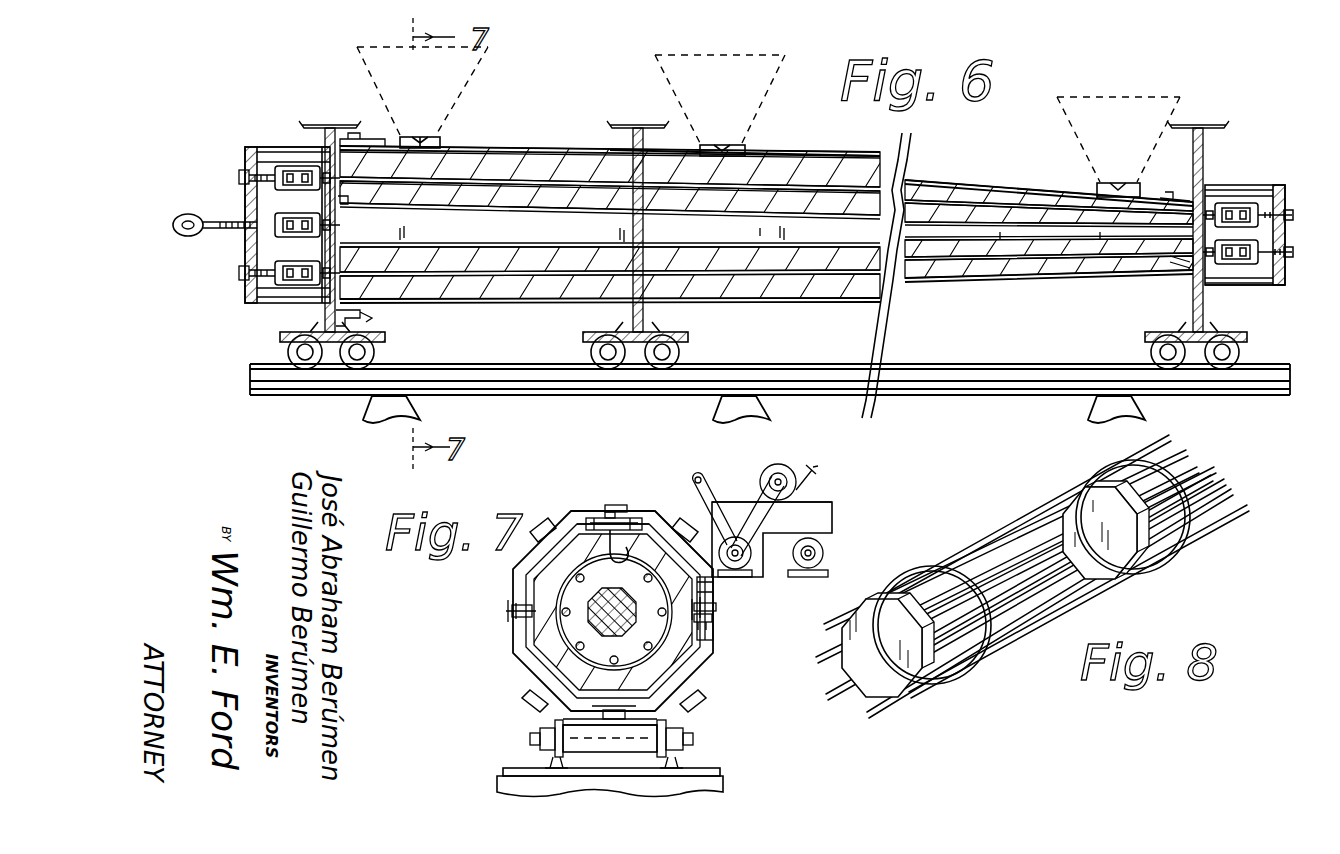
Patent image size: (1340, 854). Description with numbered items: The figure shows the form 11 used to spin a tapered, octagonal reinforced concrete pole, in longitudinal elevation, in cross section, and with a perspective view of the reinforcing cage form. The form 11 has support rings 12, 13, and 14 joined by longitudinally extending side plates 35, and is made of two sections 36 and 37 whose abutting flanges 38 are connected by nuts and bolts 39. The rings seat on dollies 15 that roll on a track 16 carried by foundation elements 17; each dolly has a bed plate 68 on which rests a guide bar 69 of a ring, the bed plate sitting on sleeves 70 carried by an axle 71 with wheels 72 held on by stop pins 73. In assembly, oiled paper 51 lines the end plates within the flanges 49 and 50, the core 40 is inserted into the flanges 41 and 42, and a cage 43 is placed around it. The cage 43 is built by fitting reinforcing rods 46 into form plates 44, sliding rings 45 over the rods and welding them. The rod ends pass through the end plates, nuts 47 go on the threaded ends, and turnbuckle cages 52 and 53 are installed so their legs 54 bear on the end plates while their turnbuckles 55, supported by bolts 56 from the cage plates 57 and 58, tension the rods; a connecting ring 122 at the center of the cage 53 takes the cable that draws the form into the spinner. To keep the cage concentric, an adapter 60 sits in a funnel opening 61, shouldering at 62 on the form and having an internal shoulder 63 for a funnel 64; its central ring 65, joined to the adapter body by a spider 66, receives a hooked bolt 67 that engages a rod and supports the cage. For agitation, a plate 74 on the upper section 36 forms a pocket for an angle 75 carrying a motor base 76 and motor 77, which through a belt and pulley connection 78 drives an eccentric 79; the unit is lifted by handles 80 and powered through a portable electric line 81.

In FIG. 6, the form 11 is at (527, 141).
In FIG. 6, the support ring 12 is at (326, 130).
In FIG. 7, the support ring 12 is at (658, 512).
In FIG. 6, the support ring 13 is at (622, 148).
In FIG. 6, the support ring 14 is at (1203, 160).
In FIG. 6, the dolly 15 is at (264, 340).
In FIG. 6, the track 16 is at (497, 362).
In FIG. 7, the track 16 is at (682, 768).
In FIG. 6, the foundation element 17 is at (372, 408).
In FIG. 6, the side plate 35 is at (490, 146).
In FIG. 7, the side plate 35 is at (540, 540).
In FIG. 7, the upper form section 36 is at (560, 515).
In FIG. 7, the form section 37 is at (548, 672).
In FIG. 7, the abutting flange 38 is at (718, 608).
In FIG. 7, the nuts and bolts 39 is at (712, 622).
In FIG. 6, the core 40 is at (458, 236).
In FIG. 7, the core 40 is at (575, 620).
In FIG. 6, the flange 41 is at (345, 202).
In FIG. 6, the flange 42 is at (1175, 260).
In FIG. 6, the cage 43 is at (775, 190).
In FIG. 8, the cage 43 is at (1022, 640).
In FIG. 8, the form plate 44 is at (896, 660).
In FIG. 8, the ring 45 is at (1090, 470).
In FIG. 8, the reinforcing rod 46 is at (968, 555).
In FIG. 6, the nut 47 is at (328, 172).
In FIG. 6, the flange 49 is at (355, 318).
In FIG. 6, the flange 50 is at (1182, 272).
In FIG. 6, the oiled paper 51 is at (372, 143).
In FIG. 6, the turnbuckle cage 52 is at (232, 198).
In FIG. 6, the turnbuckle cage 53 is at (1294, 244).
In FIG. 6, the leg 54 is at (285, 148).
In FIG. 6, the turnbuckle 55 is at (275, 237).
In FIG. 6, the bolt 56 is at (242, 172).
In FIG. 6, the cage plate 57 is at (242, 290).
In FIG. 6, the cage plate 58 is at (1282, 286).
In FIG. 7, the adapter 60 is at (602, 518).
In FIG. 7, the funnel opening 61 is at (610, 530).
In FIG. 7, the shoulder 62 is at (582, 534).
In FIG. 7, the internal shoulder 63 is at (628, 505).
In FIG. 6, the funnel 64 is at (472, 73).
In FIG. 7, the central ring 65 is at (588, 518).
In FIG. 7, the spider 66 is at (608, 512).
In FIG. 7, the bolt 67 is at (560, 590).
In FIG. 7, the bed plate 68 is at (660, 724).
In FIG. 6, the guide bar 69 is at (638, 128).
In FIG. 7, the guide bar 69 is at (620, 714).
In FIG. 7, the sleeve 70 is at (598, 740).
In FIG. 7, the axle 71 is at (535, 740).
In FIG. 7, the wheel 72 is at (545, 728).
In FIG. 7, the stop pin 73 is at (695, 740).
In FIG. 7, the plate 74 is at (715, 586).
In FIG. 7, the angle 75 is at (770, 577).
In FIG. 7, the motor base 76 is at (740, 502).
In FIG. 7, the motor 77 is at (772, 464).
In FIG. 7, the belt and pulley connection 78 is at (770, 517).
In FIG. 7, the eccentric 79 is at (720, 550).
In FIG. 7, the handle 80 is at (700, 474).
In FIG. 7, the portable electric line 81 is at (808, 468).
In FIG. 6, the connecting ring 122 is at (188, 213).